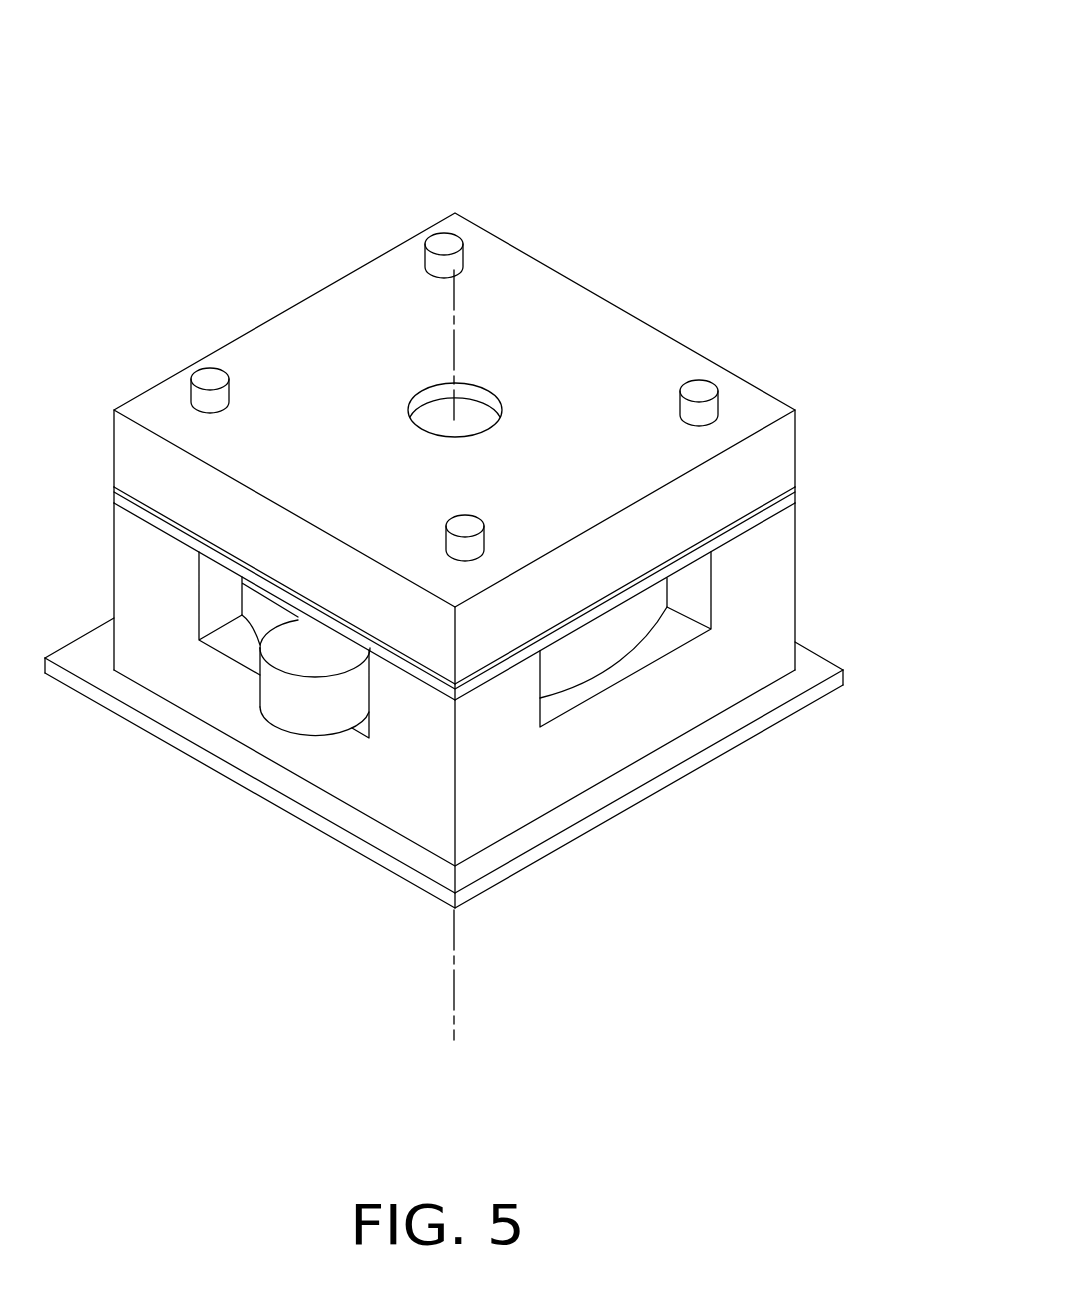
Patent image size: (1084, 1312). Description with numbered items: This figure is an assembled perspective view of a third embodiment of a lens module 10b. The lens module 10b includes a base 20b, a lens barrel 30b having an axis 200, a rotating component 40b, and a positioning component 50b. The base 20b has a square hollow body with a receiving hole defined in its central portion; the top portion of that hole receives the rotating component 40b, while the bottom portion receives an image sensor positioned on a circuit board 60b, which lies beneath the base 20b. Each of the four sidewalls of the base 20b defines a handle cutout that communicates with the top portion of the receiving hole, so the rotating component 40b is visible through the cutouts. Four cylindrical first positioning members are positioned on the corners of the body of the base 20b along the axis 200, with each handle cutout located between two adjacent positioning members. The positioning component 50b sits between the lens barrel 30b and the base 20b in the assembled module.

The lens module 10b is at (478, 32).
The axis 200 is at (457, 343).
The lens barrel 30b is at (768, 458).
The positioning component 50b is at (788, 509).
The base 20b is at (747, 607).
The rotating component 40b is at (298, 697).
The circuit board 60b is at (642, 793).